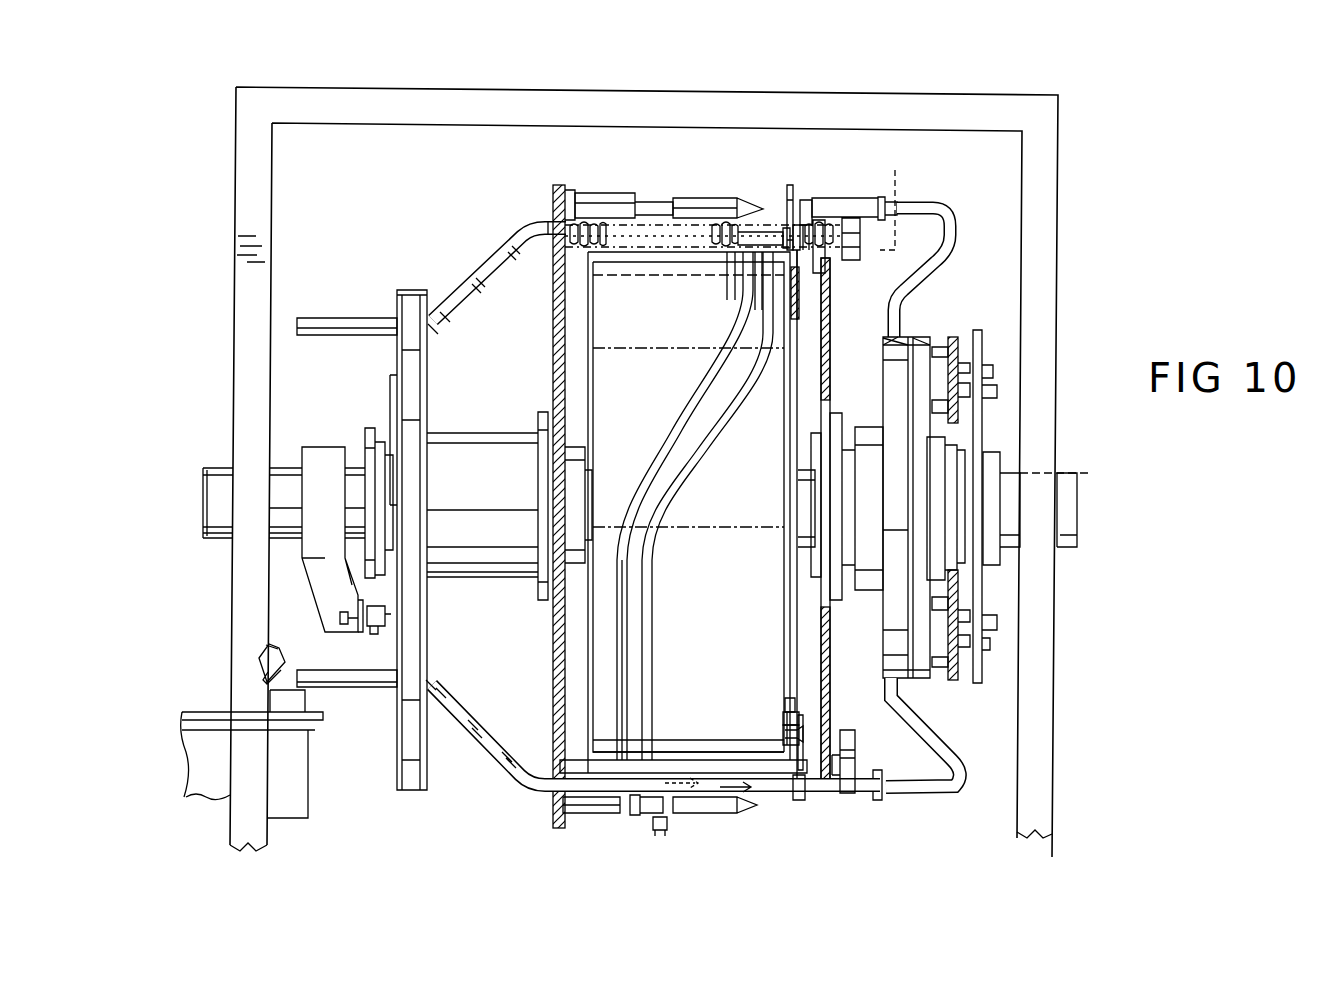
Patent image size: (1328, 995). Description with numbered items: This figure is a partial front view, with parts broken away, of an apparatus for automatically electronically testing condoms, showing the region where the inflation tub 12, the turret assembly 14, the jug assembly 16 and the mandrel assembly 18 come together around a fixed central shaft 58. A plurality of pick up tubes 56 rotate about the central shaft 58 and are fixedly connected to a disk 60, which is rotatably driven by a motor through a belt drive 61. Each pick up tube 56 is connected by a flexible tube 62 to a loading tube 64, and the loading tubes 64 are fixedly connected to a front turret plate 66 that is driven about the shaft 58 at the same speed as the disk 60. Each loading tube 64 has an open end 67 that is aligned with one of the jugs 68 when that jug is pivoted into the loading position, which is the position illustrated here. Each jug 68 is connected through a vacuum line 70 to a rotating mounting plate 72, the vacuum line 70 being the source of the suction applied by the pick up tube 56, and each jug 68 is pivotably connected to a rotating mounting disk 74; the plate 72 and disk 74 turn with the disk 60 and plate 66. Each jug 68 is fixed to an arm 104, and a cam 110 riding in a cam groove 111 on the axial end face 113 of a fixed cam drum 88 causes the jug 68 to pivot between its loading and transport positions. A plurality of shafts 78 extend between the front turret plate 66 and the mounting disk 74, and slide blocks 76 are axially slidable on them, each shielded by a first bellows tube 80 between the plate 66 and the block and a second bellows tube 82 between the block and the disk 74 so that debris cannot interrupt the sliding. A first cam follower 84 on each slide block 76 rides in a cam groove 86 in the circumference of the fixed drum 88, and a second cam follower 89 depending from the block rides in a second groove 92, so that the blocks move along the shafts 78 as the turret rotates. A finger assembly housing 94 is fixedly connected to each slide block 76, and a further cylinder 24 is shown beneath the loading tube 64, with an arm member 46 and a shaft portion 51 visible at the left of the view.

The inflation tub 12 is at (298, 793).
The turret assembly 14 is at (549, 282).
The jug assembly 16 is at (868, 178).
The mandrel assembly 18 is at (704, 180).
The hydraulic cylinder 24 is at (686, 820).
The arm 46 is at (276, 674).
The shaft 51 is at (487, 550).
The pick up tube 56 is at (342, 326).
The central shaft 58 is at (212, 476).
The disk 60 is at (426, 376).
The belt drive 61 is at (421, 761).
The flexible tube 62 is at (502, 762).
The loading tube 64 is at (609, 796).
The front turret plate 66 is at (555, 330).
The open end 67 is at (796, 802).
The jug 68 is at (843, 202).
The vacuum line 70 is at (939, 746).
The rotating mounting plate 72 is at (912, 344).
The rotating mounting disk 74 is at (826, 680).
The slide block 76 is at (774, 202).
The shaft 78 is at (737, 202).
The first bellows tube 80 is at (600, 195).
The second bellows tube 82 is at (823, 202).
The first cam follower 84 is at (744, 262).
The cam groove 86 is at (704, 378).
The fixed cam drum 88 is at (718, 590).
The second cam follower 89 is at (746, 288).
The second groove 92 is at (734, 400).
The finger assembly housing 94 is at (796, 214).
The arm 104 is at (846, 792).
The cam 110 is at (784, 722).
The cam groove 111 is at (788, 704).
The axial end face 113 is at (786, 740).